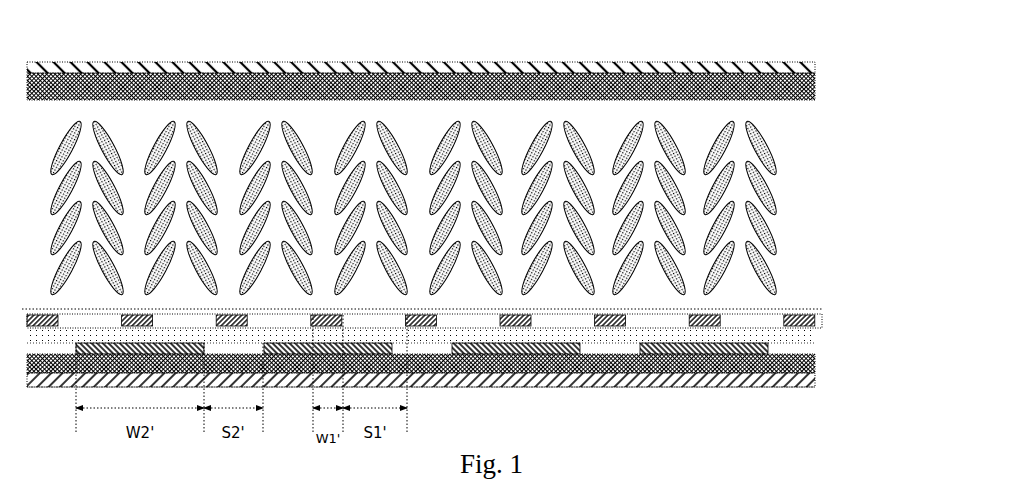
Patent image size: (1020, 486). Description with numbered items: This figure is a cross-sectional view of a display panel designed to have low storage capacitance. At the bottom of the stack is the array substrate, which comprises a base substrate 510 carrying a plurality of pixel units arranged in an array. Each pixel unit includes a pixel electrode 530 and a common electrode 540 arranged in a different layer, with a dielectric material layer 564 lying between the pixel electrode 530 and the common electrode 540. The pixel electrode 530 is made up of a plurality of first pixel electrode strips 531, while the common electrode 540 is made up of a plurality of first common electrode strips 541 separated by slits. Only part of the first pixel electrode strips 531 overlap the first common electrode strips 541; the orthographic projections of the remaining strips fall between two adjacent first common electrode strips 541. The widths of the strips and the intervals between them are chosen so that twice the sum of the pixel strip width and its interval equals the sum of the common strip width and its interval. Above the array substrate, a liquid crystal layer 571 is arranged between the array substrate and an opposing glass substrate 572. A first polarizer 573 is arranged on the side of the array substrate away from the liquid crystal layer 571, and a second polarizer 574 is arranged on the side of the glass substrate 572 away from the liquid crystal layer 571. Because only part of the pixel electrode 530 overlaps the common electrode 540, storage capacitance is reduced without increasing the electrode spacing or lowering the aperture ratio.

The second polarizer 574 is at (815, 68).
The glass substrate 572 is at (815, 88).
The liquid crystal layer 571 is at (775, 216).
The first pixel electrode strips 531 is at (805, 310).
The pixel electrode 530 is at (822, 321).
The dielectric material layer 564 is at (813, 341).
The common electrode 540 is at (815, 349).
The base substrate 510 is at (815, 367).
The first polarizer 573 is at (813, 380).
The first common electrode strips 541 is at (773, 383).